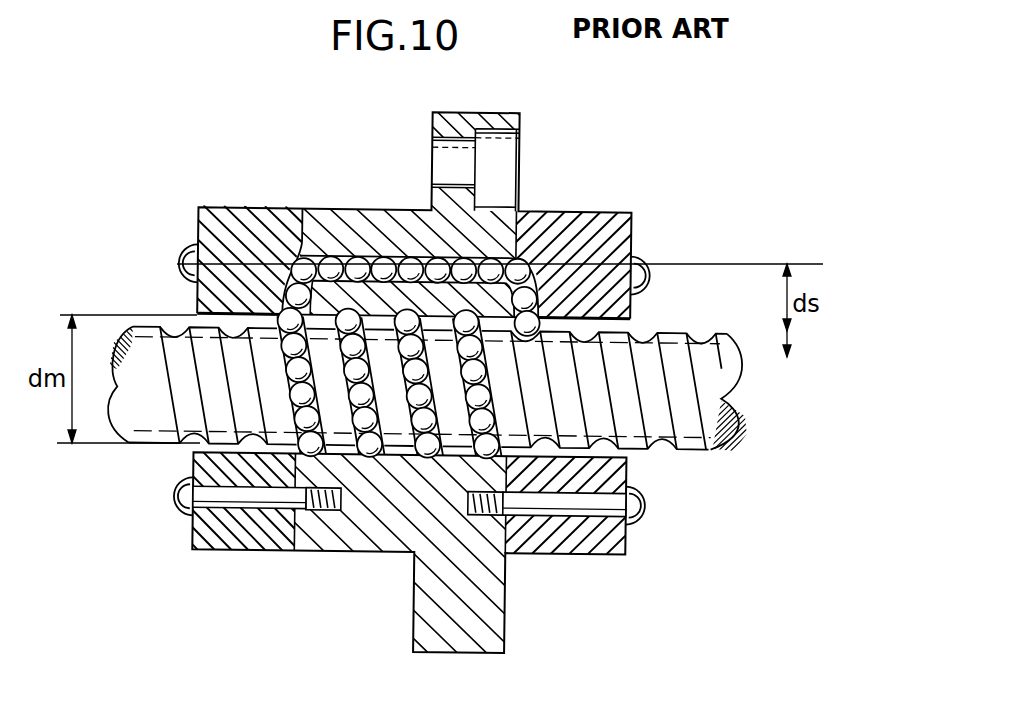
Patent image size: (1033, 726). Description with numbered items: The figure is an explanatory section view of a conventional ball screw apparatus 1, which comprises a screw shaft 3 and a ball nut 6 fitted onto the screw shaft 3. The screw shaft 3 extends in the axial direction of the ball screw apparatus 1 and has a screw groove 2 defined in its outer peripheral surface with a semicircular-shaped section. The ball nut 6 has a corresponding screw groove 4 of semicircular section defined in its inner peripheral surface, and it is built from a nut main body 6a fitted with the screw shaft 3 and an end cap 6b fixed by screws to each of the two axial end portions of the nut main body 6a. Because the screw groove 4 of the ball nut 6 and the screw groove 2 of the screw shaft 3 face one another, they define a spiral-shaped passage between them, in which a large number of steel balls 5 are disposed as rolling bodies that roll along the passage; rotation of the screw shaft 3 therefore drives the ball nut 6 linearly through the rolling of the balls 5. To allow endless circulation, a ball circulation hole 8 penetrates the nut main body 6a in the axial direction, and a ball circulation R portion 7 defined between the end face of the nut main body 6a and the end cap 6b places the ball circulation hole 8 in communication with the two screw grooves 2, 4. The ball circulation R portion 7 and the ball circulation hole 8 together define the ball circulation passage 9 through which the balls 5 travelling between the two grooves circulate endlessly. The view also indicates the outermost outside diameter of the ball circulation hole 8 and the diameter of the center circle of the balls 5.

The ball screw apparatus 1 is at (660, 164).
The screw groove 2 is at (663, 448).
The screw shaft 3 is at (683, 328).
The screw groove 4 is at (392, 458).
The balls 5 is at (356, 262).
The ball nut 6 is at (403, 198).
The nut main body 6a is at (370, 210).
The end cap 6b is at (218, 208).
The ball circulation R portion 7 is at (290, 262).
The ball circulation hole 8 is at (307, 262).
The ball circulation passage 9 is at (303, 135).